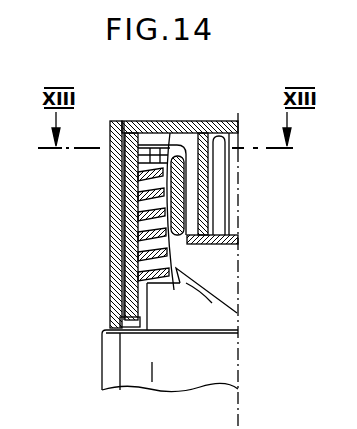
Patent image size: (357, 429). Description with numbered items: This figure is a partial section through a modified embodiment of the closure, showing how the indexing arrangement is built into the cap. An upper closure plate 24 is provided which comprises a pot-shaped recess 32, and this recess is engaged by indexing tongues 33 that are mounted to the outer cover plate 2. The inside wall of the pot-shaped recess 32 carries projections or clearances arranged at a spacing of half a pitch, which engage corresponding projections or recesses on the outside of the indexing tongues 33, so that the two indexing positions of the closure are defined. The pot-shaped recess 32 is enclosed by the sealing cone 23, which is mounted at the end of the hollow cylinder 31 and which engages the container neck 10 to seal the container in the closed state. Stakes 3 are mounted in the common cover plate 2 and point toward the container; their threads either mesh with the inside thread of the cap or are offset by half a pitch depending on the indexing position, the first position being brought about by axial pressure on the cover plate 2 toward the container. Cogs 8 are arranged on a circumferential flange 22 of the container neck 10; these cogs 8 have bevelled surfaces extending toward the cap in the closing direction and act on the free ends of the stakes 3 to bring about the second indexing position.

The cover plate 2 is at (202, 122).
The stakes 3 is at (126, 216).
The cogs 8 is at (130, 318).
The container neck 10 is at (208, 306).
The circumferential flange 22 is at (112, 348).
The sealing cone 23 is at (160, 297).
The upper closure plate 24 is at (170, 125).
The hollow cylinder 31 is at (120, 163).
The pot-shaped recess 32 is at (221, 244).
The indexing tongues 33 is at (210, 173).